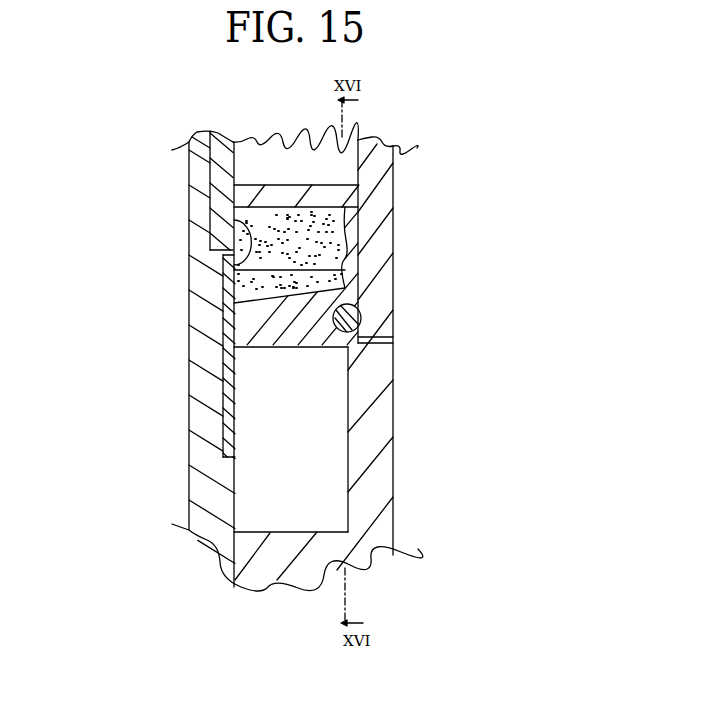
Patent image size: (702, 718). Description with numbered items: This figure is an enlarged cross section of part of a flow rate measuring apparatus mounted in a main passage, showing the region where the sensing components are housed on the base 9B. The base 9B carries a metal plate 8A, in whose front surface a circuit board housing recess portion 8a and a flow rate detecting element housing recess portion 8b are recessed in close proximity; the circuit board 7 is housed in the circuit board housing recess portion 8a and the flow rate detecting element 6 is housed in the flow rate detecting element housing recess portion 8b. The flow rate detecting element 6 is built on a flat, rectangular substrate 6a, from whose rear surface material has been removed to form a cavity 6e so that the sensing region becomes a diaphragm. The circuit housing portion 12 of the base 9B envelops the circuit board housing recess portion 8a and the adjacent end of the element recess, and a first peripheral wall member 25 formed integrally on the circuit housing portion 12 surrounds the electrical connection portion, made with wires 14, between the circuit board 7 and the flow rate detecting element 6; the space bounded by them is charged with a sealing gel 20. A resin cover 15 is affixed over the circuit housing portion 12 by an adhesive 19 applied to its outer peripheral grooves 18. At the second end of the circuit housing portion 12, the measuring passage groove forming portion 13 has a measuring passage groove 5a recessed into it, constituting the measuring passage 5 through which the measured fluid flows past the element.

The measuring passage 5 is at (320, 447).
The measuring passage groove 5a is at (348, 478).
The flow rate detecting element 6 is at (230, 300).
The substrate 6a is at (232, 330).
The cavity 6e is at (228, 425).
The circuit board 7 is at (196, 171).
The metal plate 8A is at (189, 273).
The circuit board housing recess portion 8a is at (212, 203).
The flow rate detecting element housing recess portion 8b is at (223, 363).
The base 9B is at (396, 412).
The circuit housing portion 12 is at (350, 228).
The measuring passage groove forming portion 13 is at (370, 383).
The wires 14 is at (208, 237).
The resin cover 15 is at (380, 285).
The outer peripheral grooves 18 is at (360, 343).
The adhesive 19 is at (360, 313).
The sealing gel 20 is at (330, 255).
The first peripheral wall member 25 is at (347, 190).